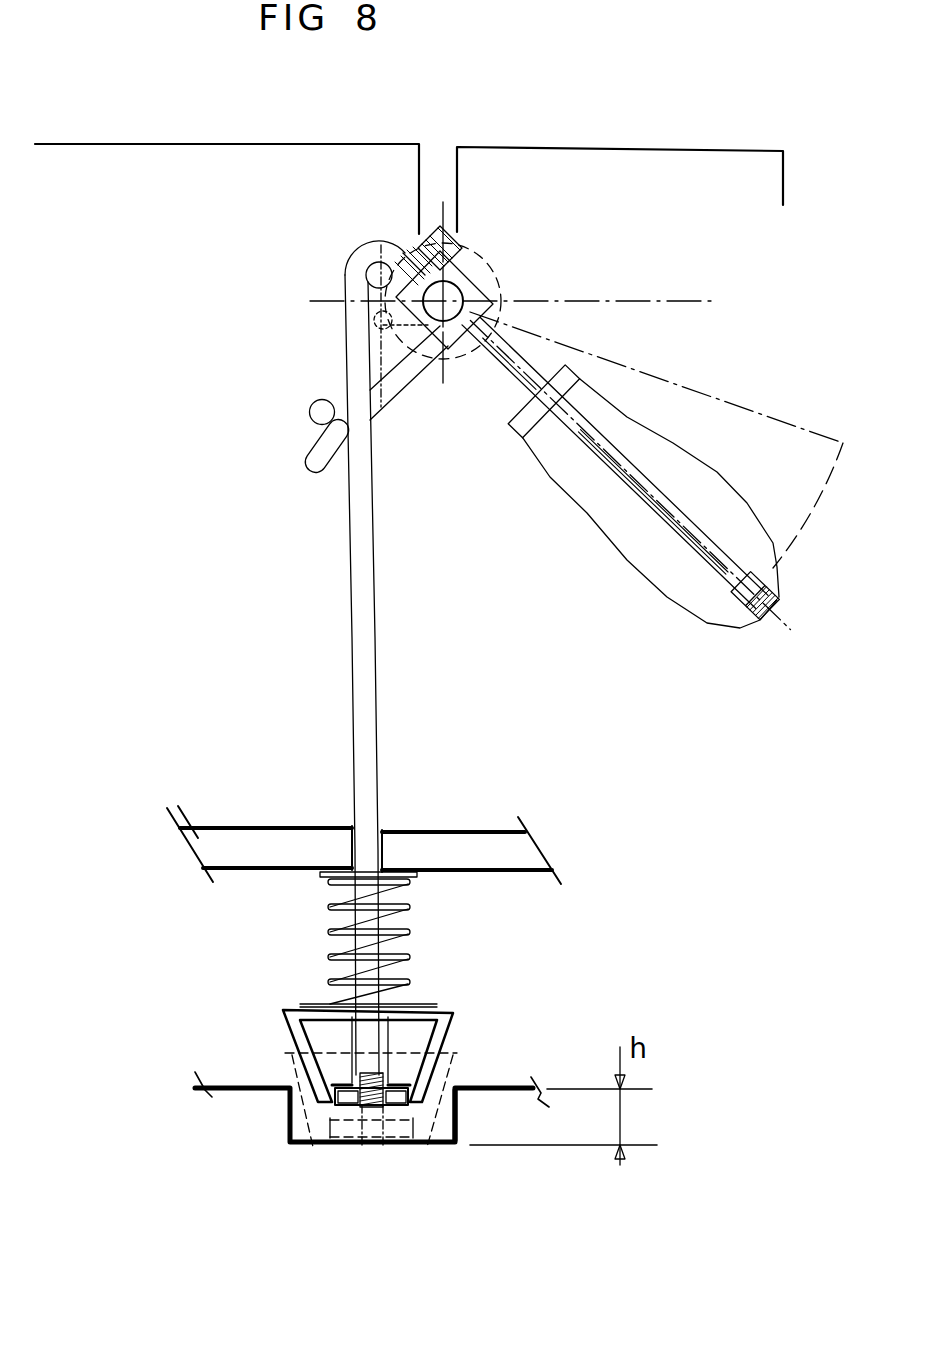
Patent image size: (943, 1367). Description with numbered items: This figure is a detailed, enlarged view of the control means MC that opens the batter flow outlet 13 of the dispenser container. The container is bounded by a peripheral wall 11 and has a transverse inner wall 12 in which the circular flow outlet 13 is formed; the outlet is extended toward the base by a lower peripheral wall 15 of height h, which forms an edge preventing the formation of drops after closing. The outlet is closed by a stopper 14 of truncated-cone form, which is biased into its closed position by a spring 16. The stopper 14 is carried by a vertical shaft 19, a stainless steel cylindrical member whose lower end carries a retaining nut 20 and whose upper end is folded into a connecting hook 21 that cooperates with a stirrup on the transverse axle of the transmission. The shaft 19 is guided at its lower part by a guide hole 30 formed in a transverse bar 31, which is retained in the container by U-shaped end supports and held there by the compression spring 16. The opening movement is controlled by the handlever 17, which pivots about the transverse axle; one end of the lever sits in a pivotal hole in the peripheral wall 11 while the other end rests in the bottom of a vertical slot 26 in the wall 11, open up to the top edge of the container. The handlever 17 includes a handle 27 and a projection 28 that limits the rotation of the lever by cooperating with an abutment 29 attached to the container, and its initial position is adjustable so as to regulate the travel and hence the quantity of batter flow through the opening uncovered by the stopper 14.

The peripheral wall 11 is at (678, 178).
The transverse inner wall 12 is at (216, 1097).
The flow outlet 13 is at (305, 1127).
The stopper 14 is at (428, 1036).
The lower peripheral wall 15 is at (465, 1118).
The spring 16 is at (410, 957).
The handlever 17 is at (786, 386).
The vertical shaft 19 is at (362, 600).
The retaining nut 20 is at (398, 1098).
The connecting hook 21 is at (358, 257).
The vertical slot 26 is at (440, 162).
The handle 27 is at (670, 598).
The projection 28 is at (397, 377).
The abutment 29 is at (318, 402).
The guide hole 30 is at (389, 815).
The transverse bar 31 is at (238, 838).
The control means MC is at (155, 505).